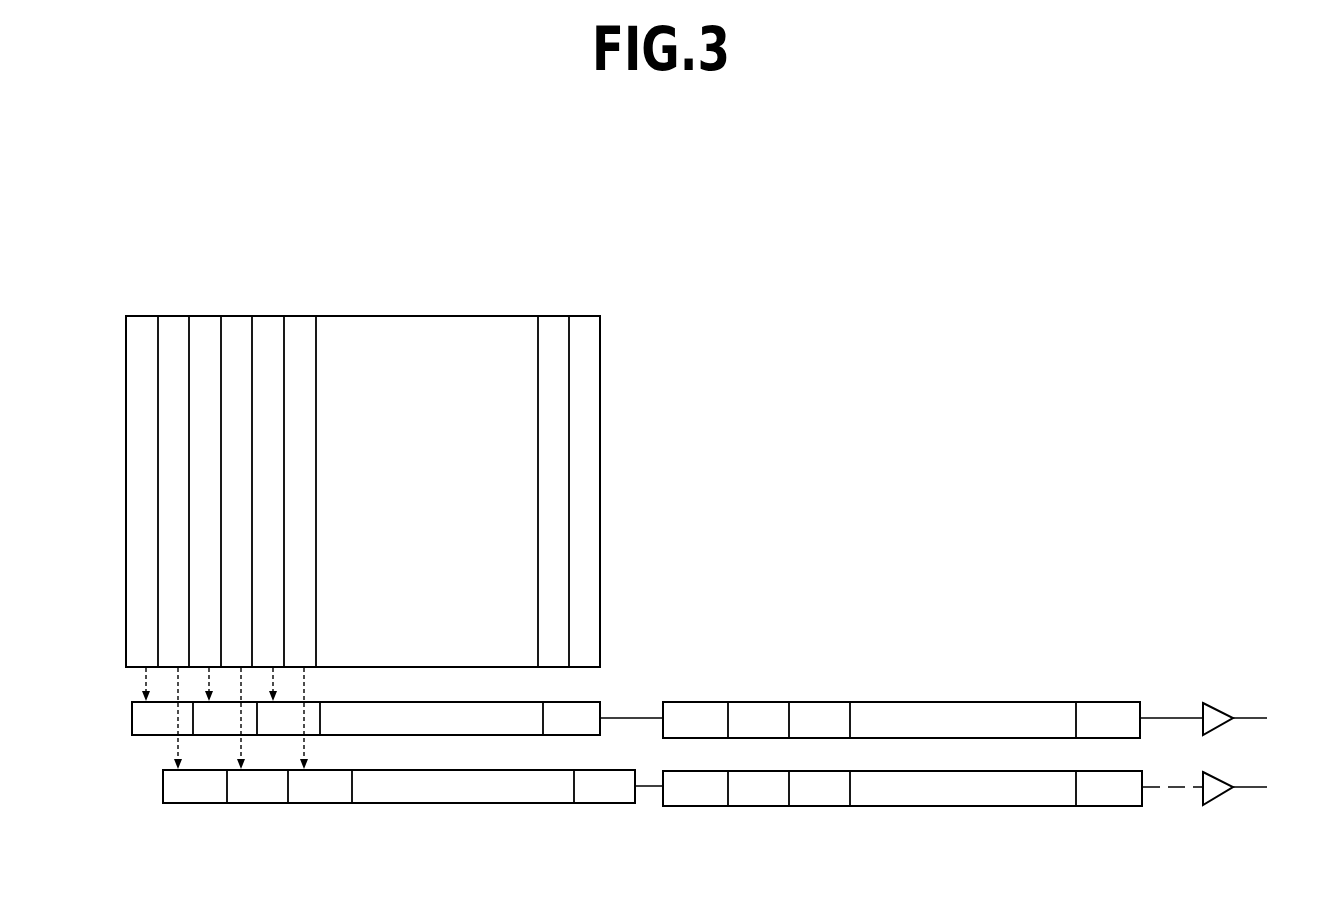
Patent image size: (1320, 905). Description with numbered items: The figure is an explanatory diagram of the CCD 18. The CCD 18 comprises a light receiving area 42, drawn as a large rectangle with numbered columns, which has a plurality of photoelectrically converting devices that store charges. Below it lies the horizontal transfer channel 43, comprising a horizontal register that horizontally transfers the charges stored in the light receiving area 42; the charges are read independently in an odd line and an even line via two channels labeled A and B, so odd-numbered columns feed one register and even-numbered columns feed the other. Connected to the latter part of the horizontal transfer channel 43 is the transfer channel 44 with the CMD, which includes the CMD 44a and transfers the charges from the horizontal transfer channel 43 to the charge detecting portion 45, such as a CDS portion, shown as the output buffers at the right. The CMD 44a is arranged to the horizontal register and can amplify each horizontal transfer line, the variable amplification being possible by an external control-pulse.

The CCD 18 is at (910, 487).
The light receiving area 42 is at (592, 492).
The horizontal transfer channel 43 is at (132, 722).
The transfer channel with CMD 44 is at (835, 770).
The CMD 44a is at (1105, 790).
The charge detecting portion 45 is at (1222, 772).